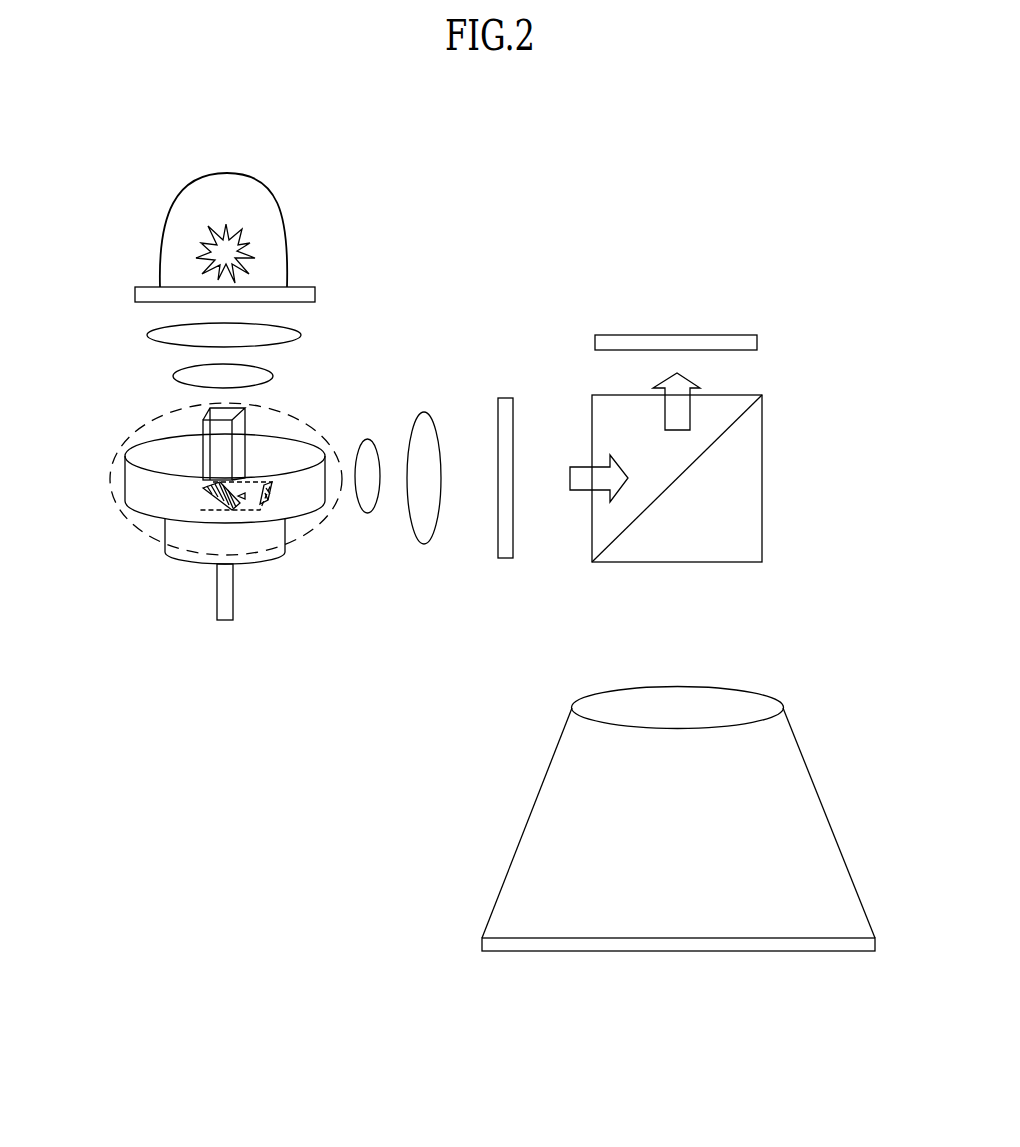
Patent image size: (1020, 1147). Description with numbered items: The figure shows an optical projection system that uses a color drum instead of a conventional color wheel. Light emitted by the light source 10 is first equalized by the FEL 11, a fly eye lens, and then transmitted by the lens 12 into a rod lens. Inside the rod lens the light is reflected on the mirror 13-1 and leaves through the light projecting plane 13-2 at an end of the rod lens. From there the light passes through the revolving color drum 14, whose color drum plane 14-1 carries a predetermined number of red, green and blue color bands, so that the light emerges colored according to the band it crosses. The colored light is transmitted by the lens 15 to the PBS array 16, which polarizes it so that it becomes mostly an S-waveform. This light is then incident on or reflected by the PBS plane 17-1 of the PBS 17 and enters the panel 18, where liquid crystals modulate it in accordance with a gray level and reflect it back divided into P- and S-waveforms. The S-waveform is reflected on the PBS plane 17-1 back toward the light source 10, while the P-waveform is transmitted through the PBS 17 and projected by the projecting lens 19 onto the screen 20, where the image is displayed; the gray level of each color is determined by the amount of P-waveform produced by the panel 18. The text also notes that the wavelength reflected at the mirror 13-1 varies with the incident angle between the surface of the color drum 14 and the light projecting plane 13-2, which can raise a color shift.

The light source 10 is at (282, 235).
The FEL (fly eye lens) 11 is at (310, 293).
The lens 12 is at (135, 342).
The mirror 13-1 is at (218, 500).
The light projecting plane 13-2 is at (272, 500).
The color drum 14 is at (128, 522).
The color drum plane 14-1 is at (132, 483).
The lens 15 is at (413, 400).
The PBS array 16 is at (508, 550).
The PBS 17 is at (755, 540).
The PBS plane 17-1 is at (743, 417).
The panel 18 is at (757, 342).
The projecting lens 19 is at (768, 702).
The screen 20 is at (482, 943).